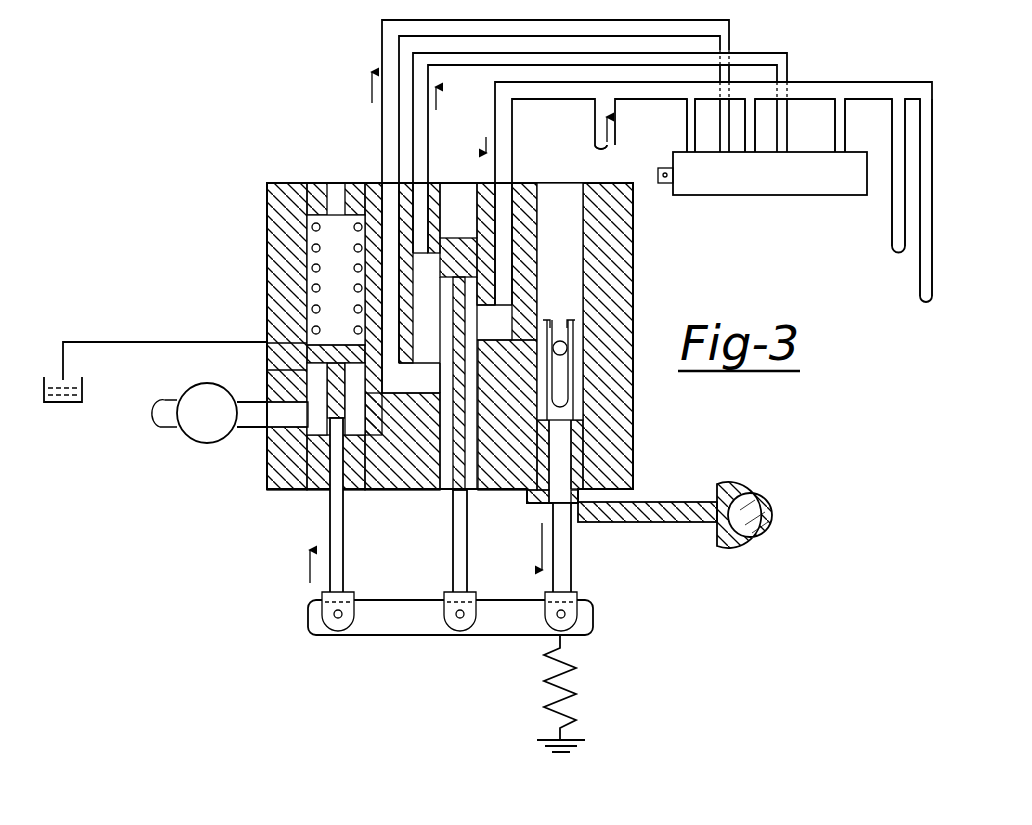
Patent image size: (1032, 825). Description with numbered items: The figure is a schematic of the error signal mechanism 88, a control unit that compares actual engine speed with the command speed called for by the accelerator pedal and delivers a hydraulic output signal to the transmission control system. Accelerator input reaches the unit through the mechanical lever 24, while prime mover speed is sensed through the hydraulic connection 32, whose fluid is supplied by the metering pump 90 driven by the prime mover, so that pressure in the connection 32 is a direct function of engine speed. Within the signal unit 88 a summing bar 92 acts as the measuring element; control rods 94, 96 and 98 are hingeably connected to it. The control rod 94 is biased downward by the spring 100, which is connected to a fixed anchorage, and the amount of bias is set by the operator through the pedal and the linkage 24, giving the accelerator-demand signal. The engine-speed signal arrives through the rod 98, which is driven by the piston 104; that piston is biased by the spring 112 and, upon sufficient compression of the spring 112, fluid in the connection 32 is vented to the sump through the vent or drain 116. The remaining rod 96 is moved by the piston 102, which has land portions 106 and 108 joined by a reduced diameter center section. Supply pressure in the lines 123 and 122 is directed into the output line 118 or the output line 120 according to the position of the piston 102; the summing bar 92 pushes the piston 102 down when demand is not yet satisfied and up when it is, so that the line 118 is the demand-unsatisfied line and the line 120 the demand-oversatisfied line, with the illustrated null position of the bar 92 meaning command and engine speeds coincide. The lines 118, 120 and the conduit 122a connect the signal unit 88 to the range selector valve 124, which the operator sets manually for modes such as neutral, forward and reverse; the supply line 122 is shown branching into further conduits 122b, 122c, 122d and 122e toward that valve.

The mechanical lever 24 is at (675, 524).
The hydraulic connection 32 is at (250, 428).
The error signal mechanism 88 is at (638, 268).
The metering pump 90 is at (185, 393).
The summing bar 92 is at (425, 636).
The control rod 94 is at (572, 562).
The control rod 96 is at (467, 560).
The control rod 98 is at (345, 557).
The spring 100 is at (578, 705).
The piston 102 is at (467, 324).
The piston 104 is at (300, 345).
The land portion 106 is at (455, 378).
The land portion 108 is at (473, 267).
The spring 112 is at (310, 225).
The vent or drain 116 is at (270, 353).
The output line 118 is at (378, 168).
The output line 120 is at (430, 167).
The supply line 122 is at (512, 167).
The hydraulic conduit 122a is at (758, 140).
The branch conduit 122b is at (684, 133).
The branch conduit 122c is at (893, 235).
The branch conduit 122d is at (847, 113).
The branch conduit 122e is at (918, 292).
The supply line 123 is at (598, 150).
The range selector valve 124 is at (738, 193).